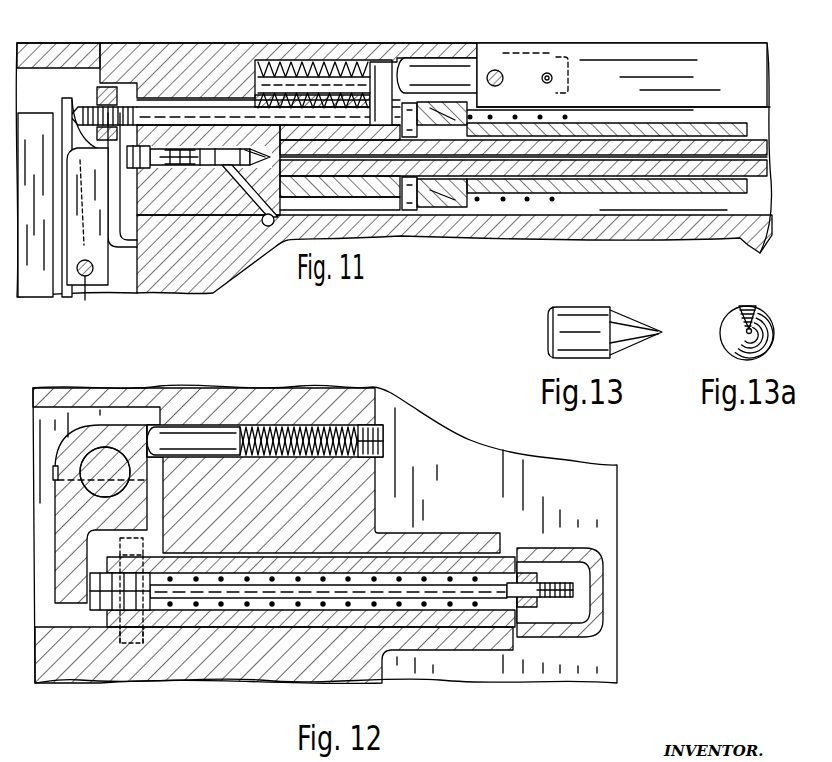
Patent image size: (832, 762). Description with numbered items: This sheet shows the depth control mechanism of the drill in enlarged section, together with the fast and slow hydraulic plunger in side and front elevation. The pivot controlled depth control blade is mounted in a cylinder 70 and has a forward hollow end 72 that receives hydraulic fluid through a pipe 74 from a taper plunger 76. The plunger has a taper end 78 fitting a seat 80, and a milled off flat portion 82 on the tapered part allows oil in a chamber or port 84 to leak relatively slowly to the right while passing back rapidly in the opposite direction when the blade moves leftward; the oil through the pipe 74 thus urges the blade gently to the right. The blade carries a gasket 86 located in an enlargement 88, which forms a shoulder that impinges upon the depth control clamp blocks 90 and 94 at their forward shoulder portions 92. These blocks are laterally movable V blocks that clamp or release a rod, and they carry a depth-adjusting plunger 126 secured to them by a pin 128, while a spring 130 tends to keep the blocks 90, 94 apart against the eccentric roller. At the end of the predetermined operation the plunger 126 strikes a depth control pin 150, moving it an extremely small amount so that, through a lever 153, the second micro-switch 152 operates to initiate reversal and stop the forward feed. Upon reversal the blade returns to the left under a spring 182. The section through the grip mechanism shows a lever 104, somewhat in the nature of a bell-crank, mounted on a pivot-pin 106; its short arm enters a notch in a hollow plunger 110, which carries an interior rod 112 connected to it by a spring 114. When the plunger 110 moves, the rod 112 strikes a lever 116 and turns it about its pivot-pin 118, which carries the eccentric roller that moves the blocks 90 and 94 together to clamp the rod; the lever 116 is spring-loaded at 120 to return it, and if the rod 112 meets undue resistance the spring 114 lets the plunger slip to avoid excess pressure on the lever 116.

In FIG. 11, the cylinder 70 is at (693, 210).
In FIG. 11, the forward hollow end 72 is at (728, 122).
In FIG. 11, the pipe 74 is at (610, 170).
In FIG. 11, the taper plunger 76 is at (272, 203).
In FIG. 13, the taper plunger 76 is at (548, 325).
In FIG. 13, the taper end 78 is at (642, 342).
In FIG. 13A, the taper end 78 is at (733, 338).
In FIG. 11, the seat 80 is at (258, 157).
In FIG. 11, the milled off flat portion 82 is at (228, 158).
In FIG. 13, the milled off flat portion 82 is at (633, 321).
In FIG. 13A, the milled off flat portion 82 is at (748, 309).
In FIG. 11, the chamber or port 84 is at (217, 165).
In FIG. 11, the gasket 86 is at (420, 207).
In FIG. 11, the enlargement 88 is at (460, 210).
In FIG. 11, the depth control clamp block 90 is at (640, 52).
In FIG. 11, the forward shoulder portions 92 is at (463, 92).
In FIG. 11, the depth control clamp block 94 is at (683, 52).
In FIG. 11, the depth-adjusting plunger 126 is at (420, 67).
In FIG. 11, the pin 128 is at (498, 73).
In FIG. 11, the spring 130 is at (550, 72).
In FIG. 11, the depth control pin 150 is at (377, 63).
In FIG. 11, the micro-switch No. 2 152 is at (42, 120).
In FIG. 11, the lever 153 is at (63, 158).
In FIG. 11, the spring 182 is at (528, 200).
In FIG. 12, the lever 104 is at (220, 624).
In FIG. 12, the pivot-pin 106 is at (127, 645).
In FIG. 12, the hollow plunger 110 is at (423, 560).
In FIG. 12, the interior rod 112 is at (480, 560).
In FIG. 12, the spring 114 is at (468, 583).
In FIG. 12, the lever 116 is at (60, 523).
In FIG. 12, the pivot-pin 118 is at (83, 461).
In FIG. 12, the spring 120 is at (290, 423).